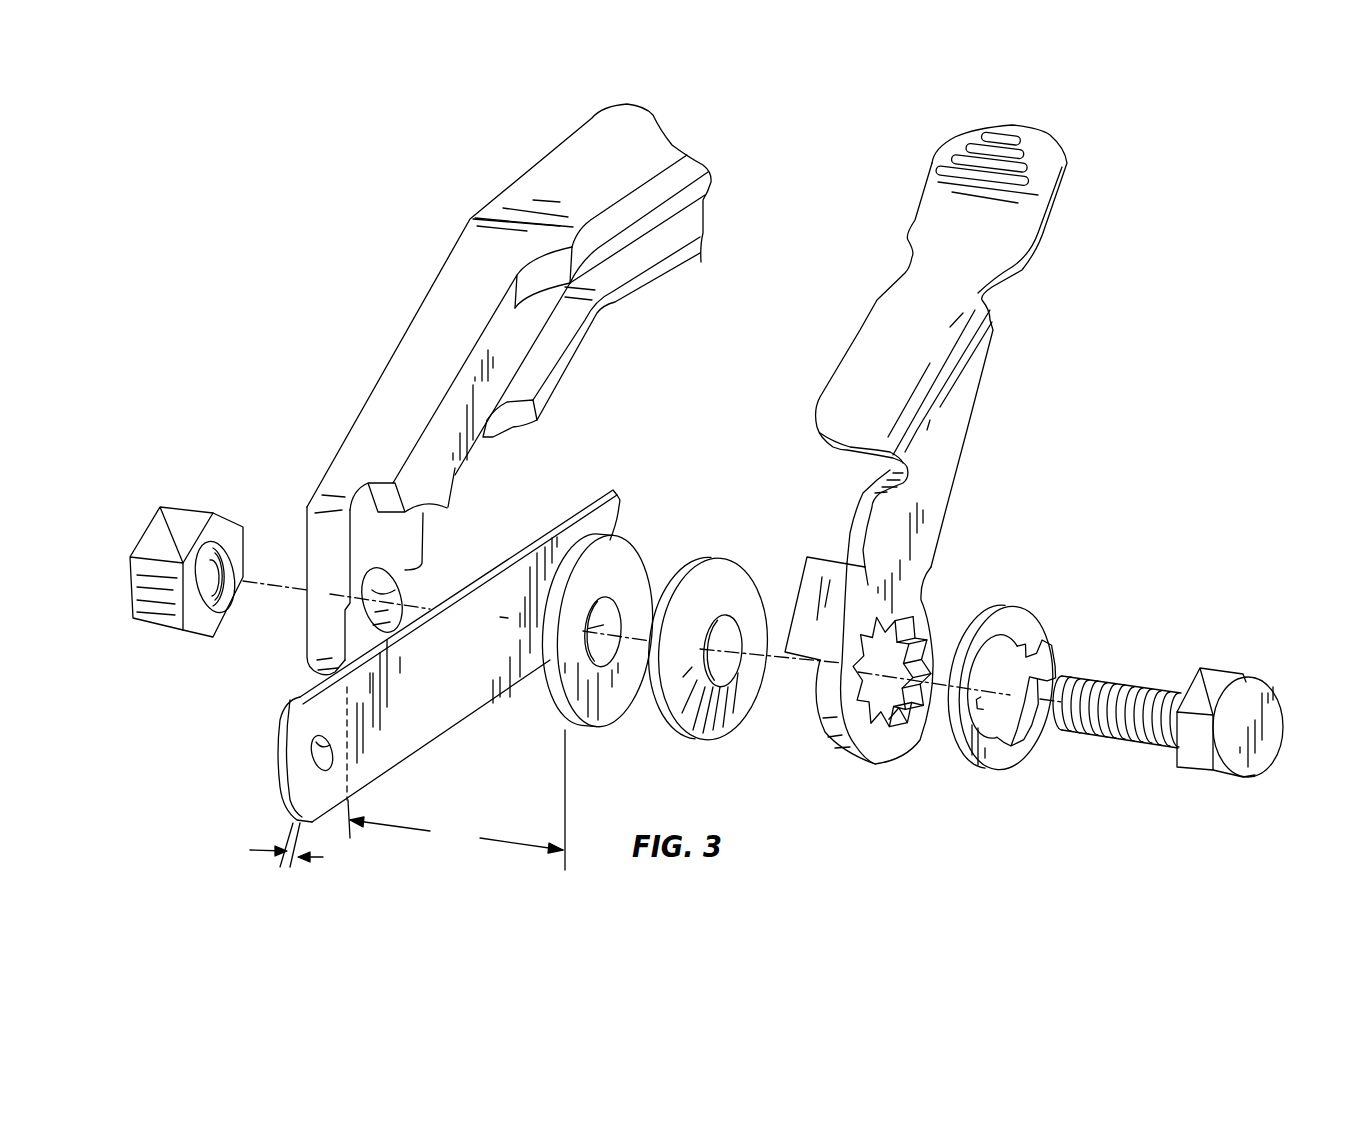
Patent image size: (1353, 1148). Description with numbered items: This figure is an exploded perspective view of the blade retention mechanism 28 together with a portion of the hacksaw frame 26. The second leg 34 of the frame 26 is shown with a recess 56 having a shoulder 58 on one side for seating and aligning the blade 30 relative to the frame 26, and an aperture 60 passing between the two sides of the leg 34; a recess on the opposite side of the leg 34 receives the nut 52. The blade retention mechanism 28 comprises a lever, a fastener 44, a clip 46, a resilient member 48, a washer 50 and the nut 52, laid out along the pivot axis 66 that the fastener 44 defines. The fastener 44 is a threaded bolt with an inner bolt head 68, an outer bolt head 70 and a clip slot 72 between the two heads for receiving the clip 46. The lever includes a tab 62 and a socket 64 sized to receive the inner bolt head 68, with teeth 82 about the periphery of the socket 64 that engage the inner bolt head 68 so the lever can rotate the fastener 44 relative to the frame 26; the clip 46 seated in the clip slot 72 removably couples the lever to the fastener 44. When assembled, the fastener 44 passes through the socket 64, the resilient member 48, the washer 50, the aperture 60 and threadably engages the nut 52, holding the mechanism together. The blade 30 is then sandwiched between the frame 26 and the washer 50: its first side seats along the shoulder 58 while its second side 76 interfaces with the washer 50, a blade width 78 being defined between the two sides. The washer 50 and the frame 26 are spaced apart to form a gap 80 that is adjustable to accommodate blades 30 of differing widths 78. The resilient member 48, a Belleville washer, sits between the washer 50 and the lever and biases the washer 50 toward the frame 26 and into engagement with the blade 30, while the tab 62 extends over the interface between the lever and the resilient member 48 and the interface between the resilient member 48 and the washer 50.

The frame 26 is at (412, 142).
The blade retention mechanism 28 is at (820, 247).
The blade 30 is at (330, 830).
The second leg 34 is at (427, 343).
The fastener 44 is at (1177, 690).
The clip 46 is at (987, 757).
The resilient member 48 is at (717, 728).
The washer 50 is at (612, 700).
The nut 52 is at (180, 527).
The recess 56 is at (333, 670).
The shoulder 58 is at (350, 633).
The aperture 60 is at (430, 580).
The tab 62 is at (812, 578).
The socket 64 is at (878, 697).
The pivot axis 66 is at (770, 657).
The inner bolt head 68 is at (1213, 675).
The outer bolt head 70 is at (1248, 777).
The clip slot 72 is at (1210, 743).
The second side 76 is at (447, 698).
The blade width 78 is at (272, 845).
The gap 80 is at (456, 800).
The teeth 82 is at (912, 648).